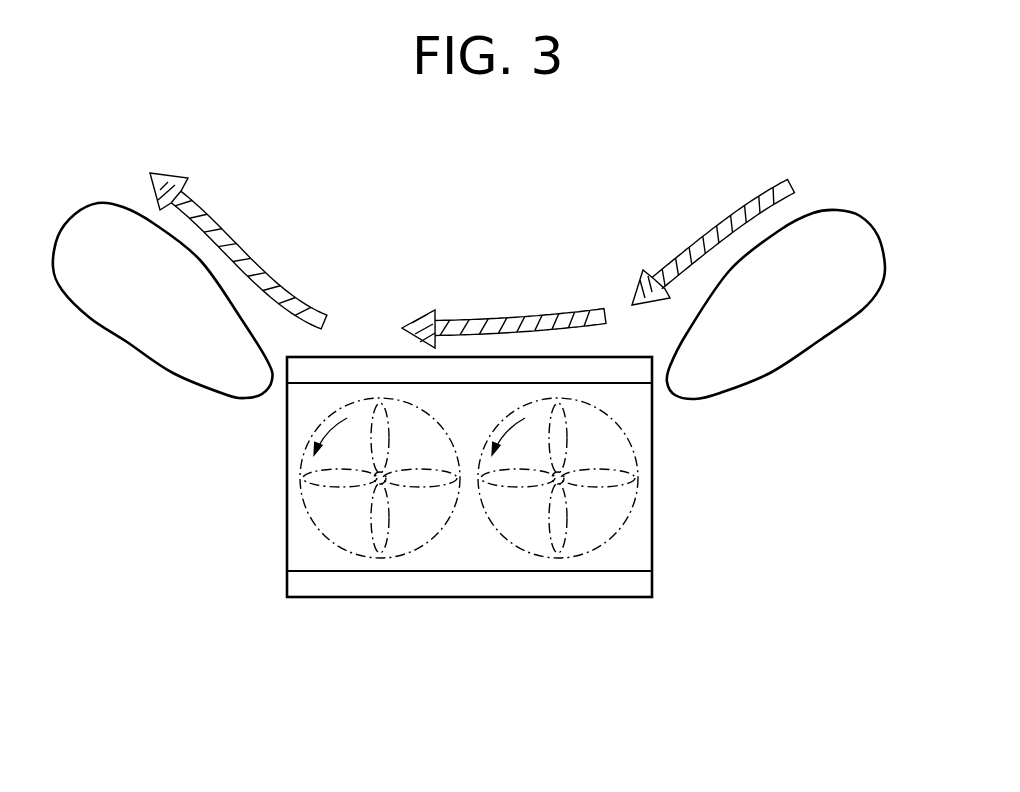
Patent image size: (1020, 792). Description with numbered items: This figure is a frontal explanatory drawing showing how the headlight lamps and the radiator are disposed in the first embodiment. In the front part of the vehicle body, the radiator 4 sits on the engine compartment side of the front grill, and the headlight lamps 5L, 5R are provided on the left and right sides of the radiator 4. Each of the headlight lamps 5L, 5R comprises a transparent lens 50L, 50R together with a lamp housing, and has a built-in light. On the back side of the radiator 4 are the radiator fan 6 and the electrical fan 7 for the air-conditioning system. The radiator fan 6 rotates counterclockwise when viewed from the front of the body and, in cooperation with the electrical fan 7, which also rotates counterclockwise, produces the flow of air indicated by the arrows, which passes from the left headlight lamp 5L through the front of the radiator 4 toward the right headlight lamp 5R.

The radiator 4 is at (483, 597).
The headlight lamp 5R is at (116, 348).
The headlight lamp 5L is at (822, 353).
The radiator fan 6 is at (370, 521).
The electrical fan 7 is at (598, 487).
The transparent lens 50R is at (178, 308).
The transparent lens 50L is at (817, 312).